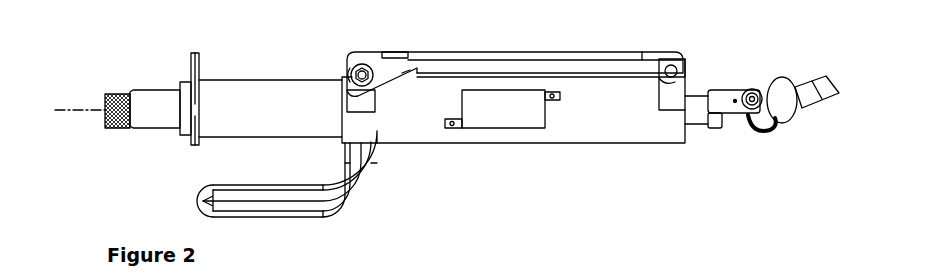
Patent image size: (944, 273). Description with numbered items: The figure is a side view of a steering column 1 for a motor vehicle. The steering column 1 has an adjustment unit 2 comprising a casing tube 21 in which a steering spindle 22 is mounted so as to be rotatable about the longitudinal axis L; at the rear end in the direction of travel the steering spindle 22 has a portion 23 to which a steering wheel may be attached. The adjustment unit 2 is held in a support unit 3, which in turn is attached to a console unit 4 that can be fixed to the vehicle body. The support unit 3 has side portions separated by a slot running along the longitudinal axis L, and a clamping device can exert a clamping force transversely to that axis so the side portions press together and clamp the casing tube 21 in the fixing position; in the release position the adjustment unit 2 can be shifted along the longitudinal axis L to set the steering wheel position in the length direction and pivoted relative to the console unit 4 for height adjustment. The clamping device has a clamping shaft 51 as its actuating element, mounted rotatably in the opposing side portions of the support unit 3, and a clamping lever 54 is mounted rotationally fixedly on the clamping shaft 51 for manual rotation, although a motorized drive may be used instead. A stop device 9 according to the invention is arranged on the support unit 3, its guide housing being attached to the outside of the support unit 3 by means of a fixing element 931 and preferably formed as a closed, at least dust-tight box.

The longitudinal axis L is at (63, 108).
The steering column 1 is at (652, 17).
The adjustment unit 2 is at (275, 72).
The support unit 3 is at (618, 123).
The console unit 4 is at (522, 54).
The stop device 9 is at (490, 134).
The casing tube 21 is at (228, 128).
The steering spindle 22 is at (149, 104).
The portion of the steering spindle 23 is at (113, 93).
The clamping shaft 51 is at (352, 68).
The clamping lever 54 is at (353, 203).
The fixing element 931 is at (453, 128).